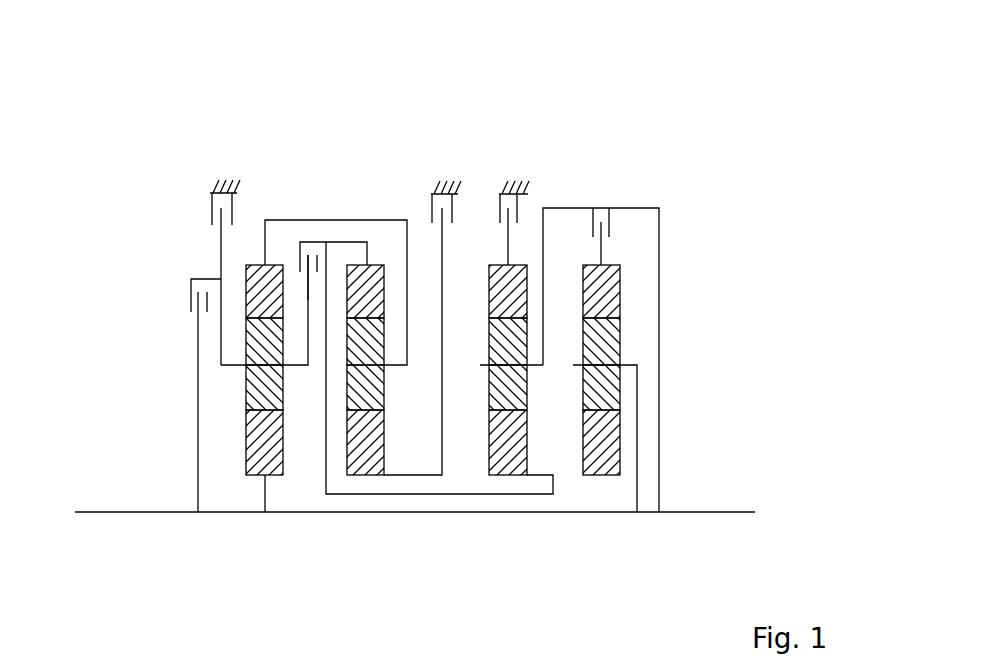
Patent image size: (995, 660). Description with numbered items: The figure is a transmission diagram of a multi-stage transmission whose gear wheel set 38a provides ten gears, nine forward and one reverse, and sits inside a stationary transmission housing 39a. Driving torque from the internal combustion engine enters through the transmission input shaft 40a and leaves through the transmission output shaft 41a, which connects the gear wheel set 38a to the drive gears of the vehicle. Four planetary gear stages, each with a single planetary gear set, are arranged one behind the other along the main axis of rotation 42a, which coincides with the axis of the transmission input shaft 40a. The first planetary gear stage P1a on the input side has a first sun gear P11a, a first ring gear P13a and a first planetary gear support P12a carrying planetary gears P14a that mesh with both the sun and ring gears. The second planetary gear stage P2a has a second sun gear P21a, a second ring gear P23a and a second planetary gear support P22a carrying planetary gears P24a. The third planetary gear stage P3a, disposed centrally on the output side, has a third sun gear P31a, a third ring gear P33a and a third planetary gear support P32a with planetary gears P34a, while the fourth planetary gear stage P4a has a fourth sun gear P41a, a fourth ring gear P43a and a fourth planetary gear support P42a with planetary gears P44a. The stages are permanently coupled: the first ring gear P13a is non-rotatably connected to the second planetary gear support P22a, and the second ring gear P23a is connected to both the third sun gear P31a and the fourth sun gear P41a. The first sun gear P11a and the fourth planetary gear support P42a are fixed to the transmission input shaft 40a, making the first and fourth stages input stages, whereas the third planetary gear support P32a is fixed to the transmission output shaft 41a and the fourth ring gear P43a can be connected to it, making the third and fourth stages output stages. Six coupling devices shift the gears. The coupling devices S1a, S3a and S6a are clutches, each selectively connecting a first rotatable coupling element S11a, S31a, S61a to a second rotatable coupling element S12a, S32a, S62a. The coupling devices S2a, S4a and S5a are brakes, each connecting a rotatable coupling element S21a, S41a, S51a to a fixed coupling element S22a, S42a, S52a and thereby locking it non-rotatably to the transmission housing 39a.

The gear wheel set 38a is at (715, 173).
The transmission housing 39a is at (208, 192).
The transmission input shaft 40a is at (215, 513).
The transmission output shaft 41a is at (706, 513).
The main axis of rotation 42a is at (107, 513).
The first planetary gear stage P1a is at (190, 324).
The first sun gear P11a is at (260, 442).
The first planetary gear support P12a is at (309, 367).
The first ring gear P13a is at (255, 253).
The planetary gears P14a is at (262, 392).
The second planetary gear stage P2a is at (387, 381).
The second sun gear P21a is at (362, 462).
The second planetary gear support P22a is at (388, 372).
The second ring gear P23a is at (446, 345).
The planetary gears P24a is at (362, 387).
The third planetary gear stage P3a is at (488, 364).
The third sun gear P31a is at (507, 465).
The third planetary gear support P32a is at (552, 445).
The third ring gear P33a is at (524, 239).
The planetary gears P34a is at (497, 383).
The fourth planetary gear stage P4a is at (694, 298).
The fourth sun gear P41a is at (608, 425).
The fourth planetary gear support P42a is at (633, 362).
The fourth ring gear P43a is at (600, 295).
The planetary gears P44a is at (600, 342).
The coupling device S1a is at (125, 352).
The first rotatable coupling element S11a is at (198, 334).
The second rotatable coupling element S12a is at (192, 280).
The coupling device S2a is at (142, 212).
The rotatable coupling element S21a is at (219, 242).
The fixed coupling element S22a is at (211, 212).
The coupling device S3a is at (302, 154).
The first rotatable coupling element S31a is at (306, 287).
The second rotatable coupling element S32a is at (318, 253).
The coupling device S4a is at (419, 245).
The rotatable coupling element S41a is at (432, 228).
The fixed coupling element S42a is at (453, 210).
The coupling device S5a is at (548, 142).
The rotatable coupling element S51a is at (499, 222).
The fixed coupling element S52a is at (518, 212).
The coupling device S6a is at (703, 159).
The first rotatable coupling element S61a is at (603, 250).
The second rotatable coupling element S62a is at (611, 232).